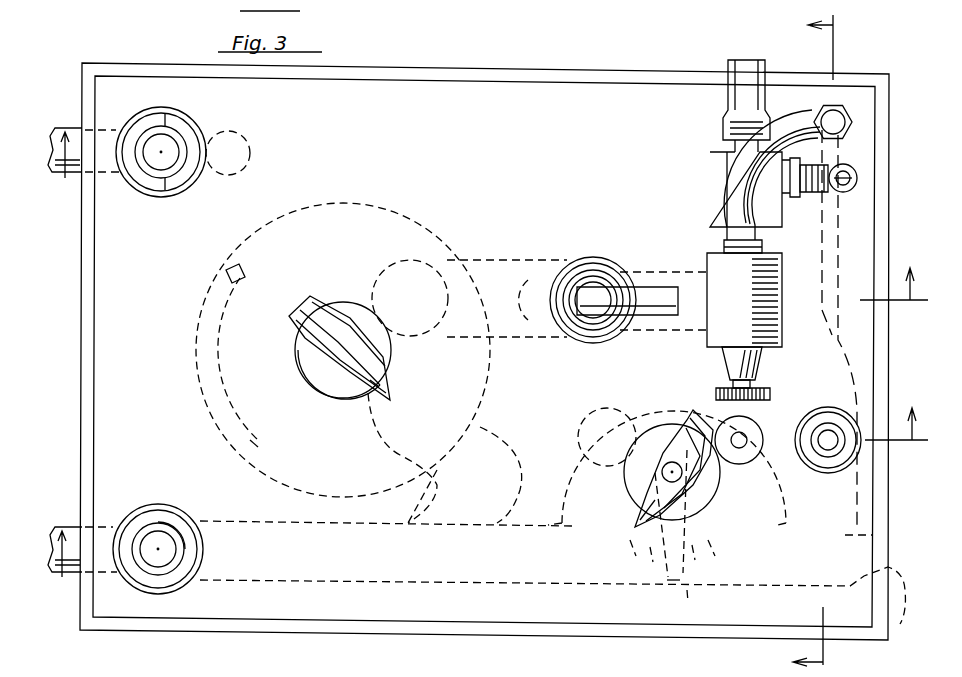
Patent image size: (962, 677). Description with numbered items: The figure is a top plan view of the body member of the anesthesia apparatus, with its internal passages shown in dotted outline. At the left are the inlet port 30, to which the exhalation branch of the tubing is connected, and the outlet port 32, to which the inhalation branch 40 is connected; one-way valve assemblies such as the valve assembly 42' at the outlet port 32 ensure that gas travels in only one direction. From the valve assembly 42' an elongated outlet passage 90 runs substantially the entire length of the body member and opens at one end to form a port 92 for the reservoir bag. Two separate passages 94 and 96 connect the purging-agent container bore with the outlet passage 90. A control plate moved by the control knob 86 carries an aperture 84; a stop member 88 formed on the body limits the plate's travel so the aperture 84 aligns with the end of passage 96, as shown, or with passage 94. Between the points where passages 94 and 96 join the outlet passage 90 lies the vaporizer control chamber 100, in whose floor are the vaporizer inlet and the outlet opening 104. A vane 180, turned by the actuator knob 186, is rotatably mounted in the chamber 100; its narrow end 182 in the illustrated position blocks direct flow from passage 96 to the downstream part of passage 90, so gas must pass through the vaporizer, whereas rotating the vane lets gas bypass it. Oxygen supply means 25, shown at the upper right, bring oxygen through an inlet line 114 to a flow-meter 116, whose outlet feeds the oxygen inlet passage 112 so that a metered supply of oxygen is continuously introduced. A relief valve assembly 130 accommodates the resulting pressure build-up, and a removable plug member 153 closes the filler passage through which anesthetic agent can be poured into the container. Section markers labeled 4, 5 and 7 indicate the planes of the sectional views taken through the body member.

The inlet port 30 is at (110, 133).
The outlet port 32 is at (108, 524).
The inhalation branch 40 is at (55, 527).
The one-way valve assembly 42' is at (181, 510).
The section line 5- 5 is at (488, 234).
The section line 7- 7 is at (488, 505).
The section line 4- 4 is at (829, 346).
The aperture 84 is at (438, 267).
The control knob 86 is at (317, 308).
The stop member 88 is at (226, 272).
The elongated outlet passage 90 is at (452, 571).
The port 92 is at (500, 360).
The passage 94 is at (490, 425).
The passage 96 is at (511, 266).
The vaporizer control chamber 100 is at (605, 425).
The outlet opening 104 is at (580, 430).
The oxygen inlet passage 112 is at (838, 248).
The inlet line 114 is at (745, 62).
The flow-meter 116 is at (722, 267).
The relief valve assembly 130 is at (617, 247).
The oxygen supply means 25 is at (852, 168).
The removable plug member 153 is at (832, 464).
The vane 180 is at (697, 525).
The narrow end 182 is at (687, 567).
The actuator knob 186 is at (650, 490).